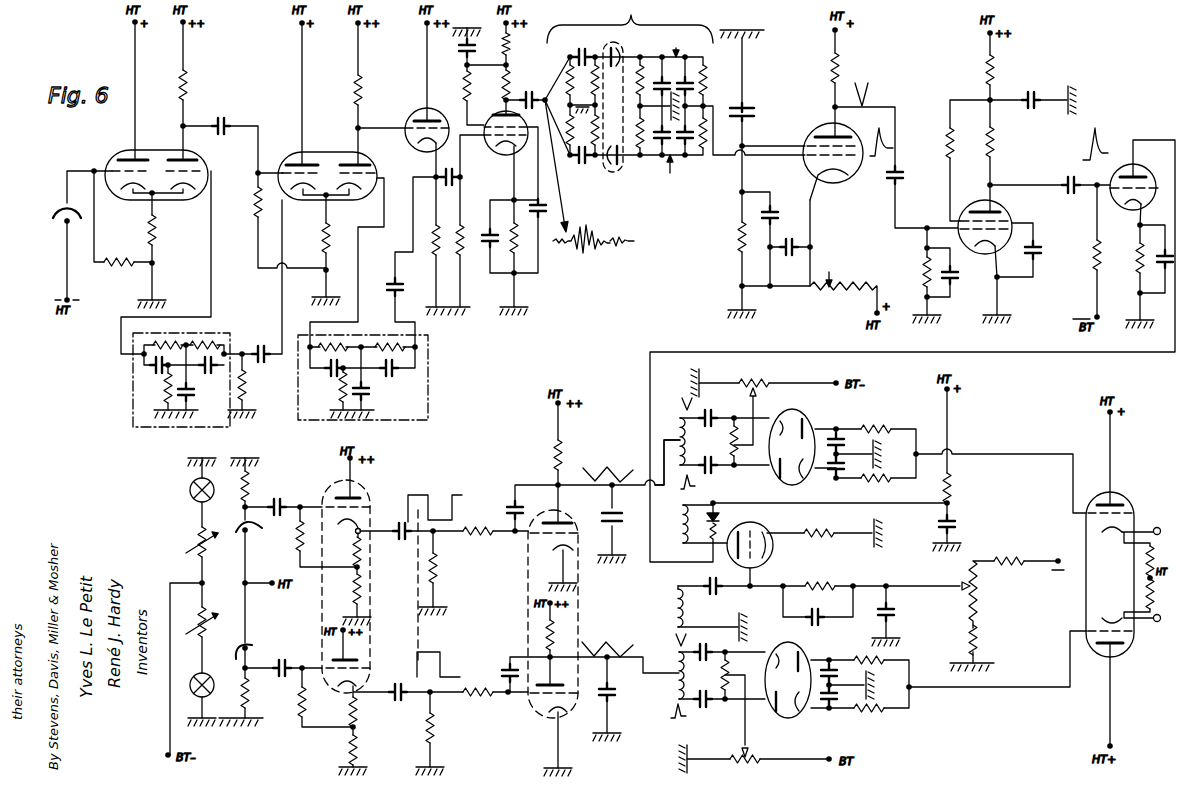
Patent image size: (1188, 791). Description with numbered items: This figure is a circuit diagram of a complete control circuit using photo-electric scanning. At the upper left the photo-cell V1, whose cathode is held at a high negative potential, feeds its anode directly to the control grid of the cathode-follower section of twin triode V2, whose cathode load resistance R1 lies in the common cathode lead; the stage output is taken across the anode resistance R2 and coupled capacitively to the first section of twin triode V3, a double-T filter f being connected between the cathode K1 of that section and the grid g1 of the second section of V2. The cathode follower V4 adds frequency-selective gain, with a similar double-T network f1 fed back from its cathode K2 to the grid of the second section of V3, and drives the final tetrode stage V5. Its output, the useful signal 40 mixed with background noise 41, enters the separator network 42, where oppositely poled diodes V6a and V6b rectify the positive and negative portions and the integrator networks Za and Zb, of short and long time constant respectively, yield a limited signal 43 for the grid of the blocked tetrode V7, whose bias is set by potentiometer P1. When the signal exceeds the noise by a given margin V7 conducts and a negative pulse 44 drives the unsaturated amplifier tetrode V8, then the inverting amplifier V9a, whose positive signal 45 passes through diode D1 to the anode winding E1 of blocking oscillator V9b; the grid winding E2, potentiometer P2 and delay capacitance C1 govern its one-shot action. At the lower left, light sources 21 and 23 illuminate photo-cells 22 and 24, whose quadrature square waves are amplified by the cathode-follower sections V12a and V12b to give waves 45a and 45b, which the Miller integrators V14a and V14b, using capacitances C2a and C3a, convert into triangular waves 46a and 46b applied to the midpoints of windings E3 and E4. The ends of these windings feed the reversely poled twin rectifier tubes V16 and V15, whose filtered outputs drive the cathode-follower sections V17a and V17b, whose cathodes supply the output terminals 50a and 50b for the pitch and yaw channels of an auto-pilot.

The light source 21 is at (192, 482).
The photo-electric cell 22 is at (253, 535).
The light source 23 is at (196, 676).
The photo-electric cell 24 is at (254, 649).
The useful signal 40 is at (584, 258).
The background noise 41 is at (615, 249).
The separator network 42 is at (676, 102).
The positive voltage signal 43 is at (890, 143).
The negative pulse 44 is at (868, 92).
The positive signal 45 is at (1103, 142).
The amplified square-wave voltage 45a is at (430, 495).
The amplified square-wave voltage 45b is at (441, 660).
The triangular wave form 46a is at (608, 469).
The triangular wave form 46b is at (607, 642).
The output terminal 50a is at (1149, 528).
The output terminal 50b is at (1149, 620).
The photo-cell V1 is at (62, 203).
The twin triode tube V2 is at (166, 159).
The twin triode amplifier tube V3 is at (333, 141).
The triode V4 is at (414, 110).
The final tetrode amplifier stage V5 is at (490, 112).
The diode V6a is at (623, 45).
The diode V6b is at (606, 168).
The blocked tetrode V7 is at (822, 133).
The tetrode V8 is at (1004, 211).
The triode V9a is at (1143, 172).
The blocking oscillator triode V9b is at (767, 551).
The triode section of dual amplifier tube V12a is at (333, 492).
The triode V12b is at (368, 680).
The triode section of dual triode tube V14a is at (530, 541).
The triode section of dual triode tube V14b is at (541, 720).
The twin rectifier tube V15 is at (795, 712).
The twin rectifier tube V16 is at (805, 415).
The triode section of output tube V17a is at (1117, 495).
The triode section of output tube V17b is at (1129, 646).
The cathode load resistance R1 is at (162, 230).
The anode resistance R2 is at (194, 85).
The grid g1 is at (192, 172).
The cathode K1 is at (256, 190).
The coupling capacitor K2 is at (434, 176).
The double-T filter f is at (133, 380).
The double-T filter network f1 is at (428, 387).
The integrator network Za is at (674, 46).
The integrator network Zb is at (667, 177).
The inductive winding E1 is at (691, 524).
The grid inductance E2 is at (698, 613).
The winding E3 is at (712, 443).
The winding E4 is at (718, 695).
The rectifier diode D1 is at (717, 511).
The potentiometer P1 is at (831, 280).
The potentiometer P2 is at (983, 589).
The capacitance C1 is at (820, 620).
The capacitance C2a is at (509, 505).
The capacitance C3a is at (609, 516).